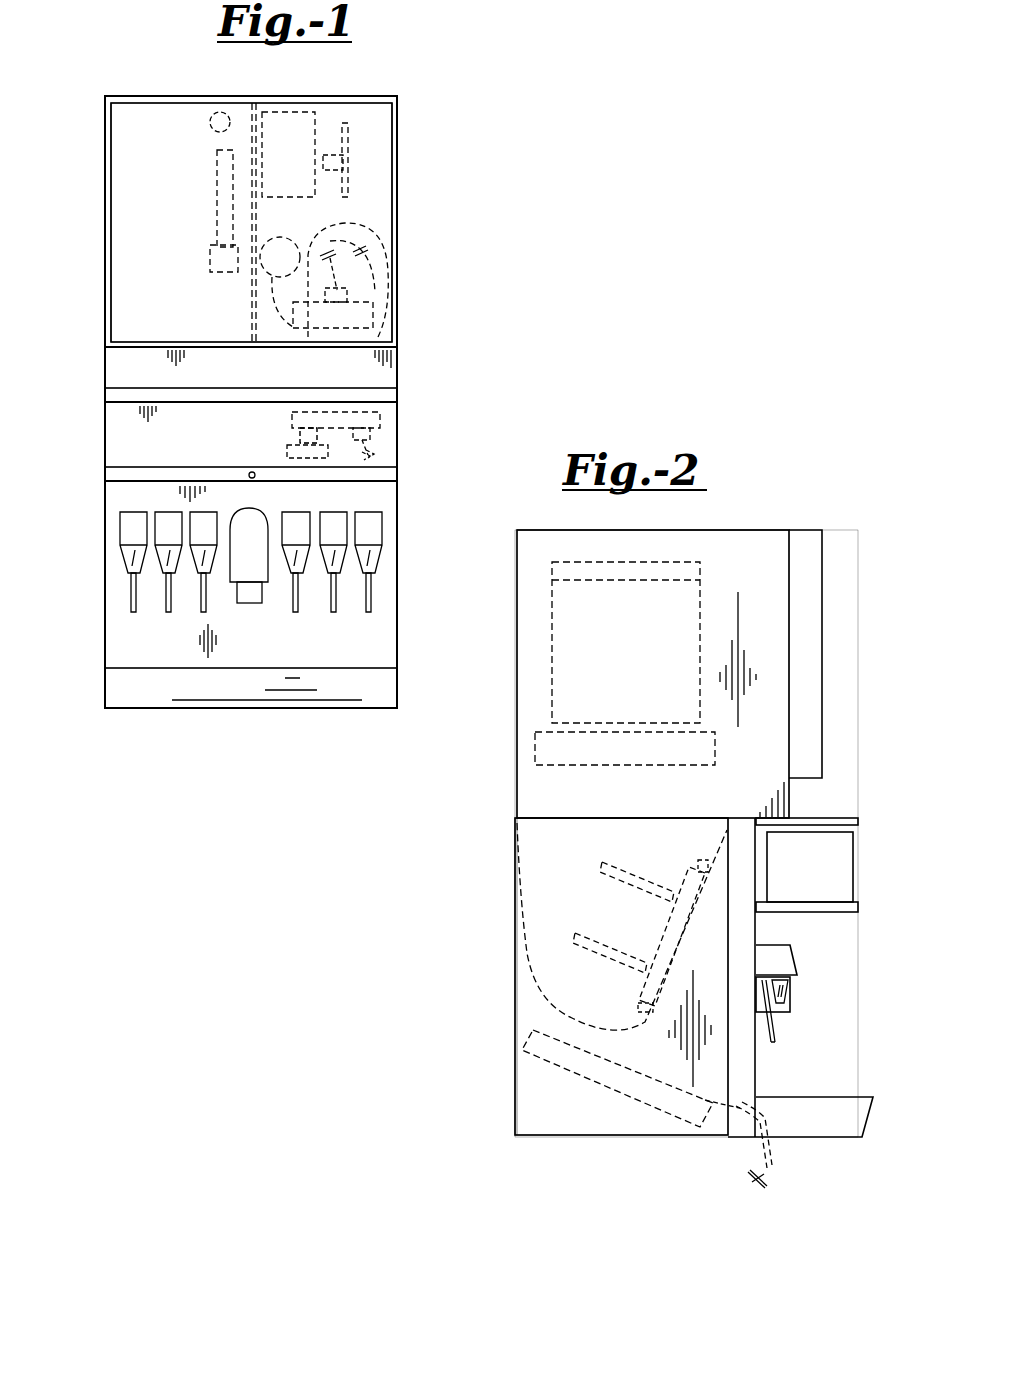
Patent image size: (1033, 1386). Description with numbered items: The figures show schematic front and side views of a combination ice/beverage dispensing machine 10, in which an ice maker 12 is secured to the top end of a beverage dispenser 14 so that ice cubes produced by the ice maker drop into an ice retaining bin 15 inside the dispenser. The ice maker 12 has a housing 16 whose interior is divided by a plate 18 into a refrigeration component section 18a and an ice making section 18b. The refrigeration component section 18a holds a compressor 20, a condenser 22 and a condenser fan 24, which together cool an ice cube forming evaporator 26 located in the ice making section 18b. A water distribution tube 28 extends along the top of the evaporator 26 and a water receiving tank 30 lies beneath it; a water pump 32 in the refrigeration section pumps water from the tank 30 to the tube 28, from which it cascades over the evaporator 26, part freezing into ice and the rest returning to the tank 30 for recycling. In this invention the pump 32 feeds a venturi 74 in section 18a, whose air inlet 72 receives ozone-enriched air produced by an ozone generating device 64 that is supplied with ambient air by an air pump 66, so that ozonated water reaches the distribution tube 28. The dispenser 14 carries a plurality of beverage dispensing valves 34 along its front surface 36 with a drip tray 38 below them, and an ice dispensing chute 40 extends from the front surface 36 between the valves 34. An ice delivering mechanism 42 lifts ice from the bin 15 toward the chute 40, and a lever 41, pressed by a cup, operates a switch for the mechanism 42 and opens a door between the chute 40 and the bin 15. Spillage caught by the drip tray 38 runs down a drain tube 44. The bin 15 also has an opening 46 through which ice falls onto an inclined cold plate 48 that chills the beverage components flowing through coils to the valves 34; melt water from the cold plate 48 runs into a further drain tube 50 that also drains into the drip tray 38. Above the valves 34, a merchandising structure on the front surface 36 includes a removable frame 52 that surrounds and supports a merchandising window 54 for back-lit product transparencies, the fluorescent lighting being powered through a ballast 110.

In FIG. 1, the combination ice/beverage dispensing machine 10 is at (512, 196).
In FIG. 2, the combination ice/beverage dispensing machine 10 is at (765, 507).
In FIG. 1, the ice maker 12 is at (98, 218).
In FIG. 2, the ice maker 12 is at (510, 720).
In FIG. 1, the beverage dispenser 14 is at (97, 523).
In FIG. 2, the beverage dispenser 14 is at (511, 980).
In FIG. 2, the ice retaining bin 15 is at (535, 858).
In FIG. 1, the housing 16 is at (400, 230).
In FIG. 1, the plate 18 is at (248, 335).
In FIG. 1, the refrigeration component section 18a is at (380, 168).
In FIG. 1, the ice making section 18b is at (125, 295).
In FIG. 1, the compressor 20 is at (380, 213).
In FIG. 1, the condenser 22 is at (318, 128).
In FIG. 1, the condenser fan 24 is at (358, 143).
In FIG. 1, the ice cube forming evaporator 26 is at (213, 197).
In FIG. 2, the ice cube forming evaporator 26 is at (550, 632).
In FIG. 1, the water distribution tube 28 is at (207, 118).
In FIG. 2, the water distribution tube 28 is at (550, 567).
In FIG. 1, the water receiving tank 30 is at (207, 267).
In FIG. 2, the water receiving tank 30 is at (537, 745).
In FIG. 1, the water pump 32 is at (270, 222).
In FIG. 1, the beverage dispensing valves 34 is at (338, 511).
In FIG. 2, the beverage dispensing valves 34 is at (792, 952).
In FIG. 1, the front surface 36 is at (111, 582).
In FIG. 2, the front surface 36 is at (756, 1065).
In FIG. 1, the drip tray 38 is at (132, 677).
In FIG. 2, the drip tray 38 is at (833, 1096).
In FIG. 1, the ice dispensing chute 40 is at (230, 563).
In FIG. 2, the ice dispensing chute 40 is at (792, 1000).
In FIG. 1, the lever 41 is at (262, 603).
In FIG. 2, the ice delivering mechanism 42 is at (667, 918).
In FIG. 2, the drain tube 44 is at (765, 1177).
In FIG. 2, the opening 46 is at (581, 978).
In FIG. 2, the cold plate 48 is at (527, 1030).
In FIG. 2, the drain tube 50 is at (722, 1110).
In FIG. 1, the removable frame 52 is at (113, 475).
In FIG. 2, the removable frame 52 is at (857, 818).
In FIG. 1, the merchandising window 54 is at (117, 425).
In FIG. 2, the merchandising window 54 is at (853, 873).
In FIG. 1, the ozone generating device 64 is at (380, 416).
In FIG. 1, the air pump 66 is at (285, 450).
In FIG. 1, the air inlet 72 is at (376, 298).
In FIG. 1, the venturi 74 is at (293, 322).
In FIG. 1, the ballast 110 is at (252, 472).